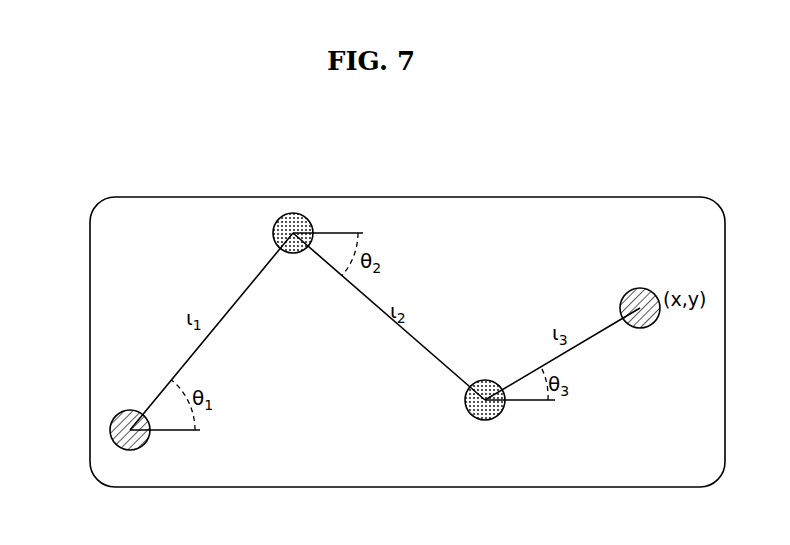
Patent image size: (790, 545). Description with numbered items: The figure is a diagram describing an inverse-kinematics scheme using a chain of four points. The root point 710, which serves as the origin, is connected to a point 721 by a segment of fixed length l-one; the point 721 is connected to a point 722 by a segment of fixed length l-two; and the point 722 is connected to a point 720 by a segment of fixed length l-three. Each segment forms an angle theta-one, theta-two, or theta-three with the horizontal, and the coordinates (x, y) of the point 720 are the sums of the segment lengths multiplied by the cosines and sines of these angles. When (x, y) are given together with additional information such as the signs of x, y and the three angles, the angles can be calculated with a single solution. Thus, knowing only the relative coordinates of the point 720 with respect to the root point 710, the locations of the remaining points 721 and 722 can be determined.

The root point 710 is at (128, 412).
The point 720 is at (638, 288).
The point 721 is at (293, 213).
The point 722 is at (482, 380).